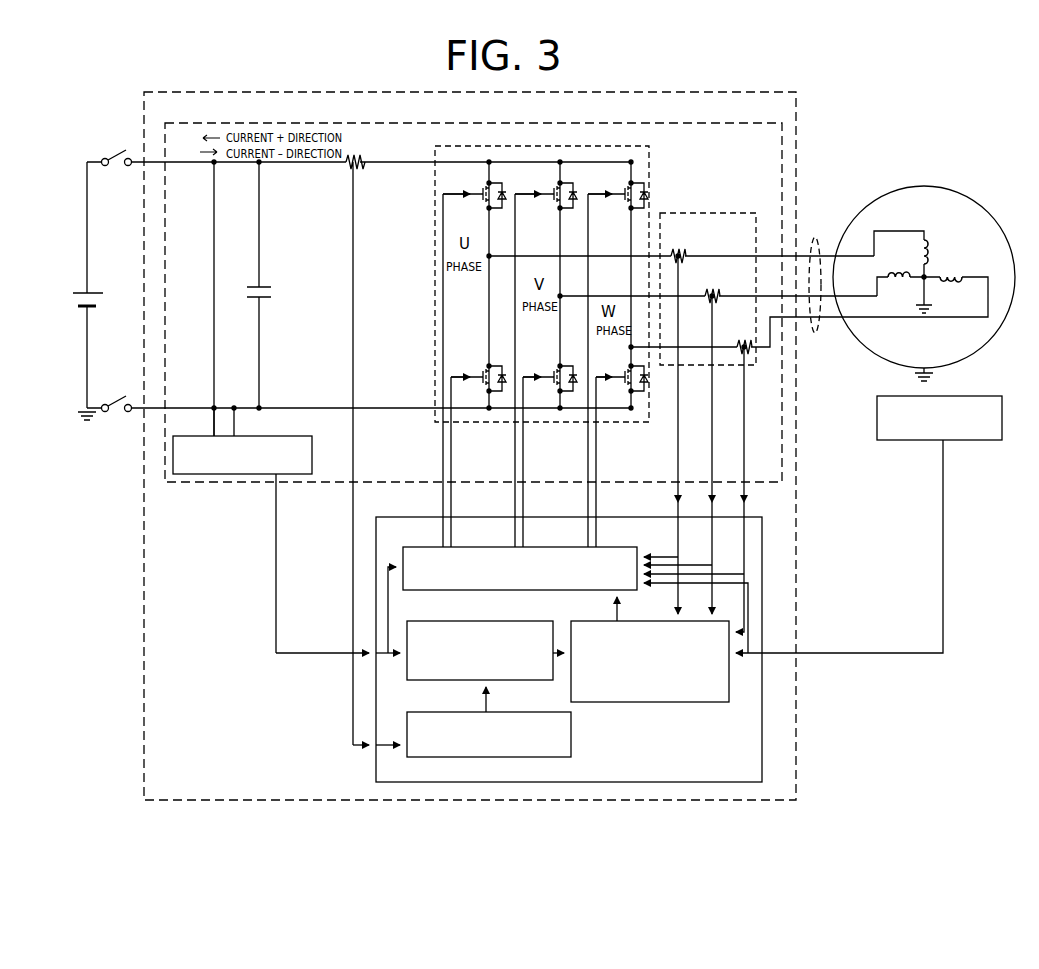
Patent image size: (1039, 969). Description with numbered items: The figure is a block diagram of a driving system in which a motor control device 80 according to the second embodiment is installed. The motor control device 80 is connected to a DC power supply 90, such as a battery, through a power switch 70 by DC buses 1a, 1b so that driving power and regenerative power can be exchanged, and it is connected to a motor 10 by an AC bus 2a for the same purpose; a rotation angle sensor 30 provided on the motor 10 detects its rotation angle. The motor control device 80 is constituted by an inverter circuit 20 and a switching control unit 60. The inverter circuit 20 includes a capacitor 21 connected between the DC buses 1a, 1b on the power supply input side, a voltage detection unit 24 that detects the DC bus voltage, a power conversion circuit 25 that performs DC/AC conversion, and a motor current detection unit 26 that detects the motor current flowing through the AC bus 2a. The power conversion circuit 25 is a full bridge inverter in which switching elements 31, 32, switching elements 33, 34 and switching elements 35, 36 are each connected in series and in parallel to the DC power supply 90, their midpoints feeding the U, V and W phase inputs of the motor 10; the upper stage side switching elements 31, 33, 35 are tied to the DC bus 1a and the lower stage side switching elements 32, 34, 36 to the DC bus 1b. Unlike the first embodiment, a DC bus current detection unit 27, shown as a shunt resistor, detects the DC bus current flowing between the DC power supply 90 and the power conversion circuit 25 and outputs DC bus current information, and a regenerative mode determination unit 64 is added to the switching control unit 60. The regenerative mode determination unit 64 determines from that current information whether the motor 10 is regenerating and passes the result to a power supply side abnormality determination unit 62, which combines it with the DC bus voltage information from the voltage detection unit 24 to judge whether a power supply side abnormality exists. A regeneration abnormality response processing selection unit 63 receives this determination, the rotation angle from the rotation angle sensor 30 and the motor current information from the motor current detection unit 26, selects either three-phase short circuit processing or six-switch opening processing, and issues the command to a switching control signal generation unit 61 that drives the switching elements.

The motor control device 80 is at (213, 92).
The inverter circuit 20 is at (668, 123).
The power conversion circuit 25 is at (651, 173).
The motor current detection unit 26 is at (715, 212).
The switching control unit 60 is at (385, 516).
The DC power supply 90 is at (76, 289).
The power switch 70 is at (116, 147).
The DC bus 1a is at (201, 163).
The DC bus 1b is at (206, 407).
The capacitor 21 is at (250, 279).
The DC bus current detection unit 27 is at (362, 161).
The voltage detection unit 24 is at (270, 437).
The switching element 31 is at (485, 208).
The switching element 32 is at (484, 369).
The switching element 33 is at (555, 208).
The switching element 34 is at (555, 369).
The switching element 35 is at (626, 208).
The switching element 36 is at (627, 369).
The AC bus 2a is at (815, 243).
The motor 10 is at (895, 187).
The rotation angle sensor 30 is at (876, 404).
The switching control signal generation unit 61 is at (409, 547).
The power supply side abnormality determination unit 62 is at (420, 621).
The regeneration abnormality response processing selection unit 63 is at (587, 621).
The regenerative mode determination unit 64 is at (410, 712).